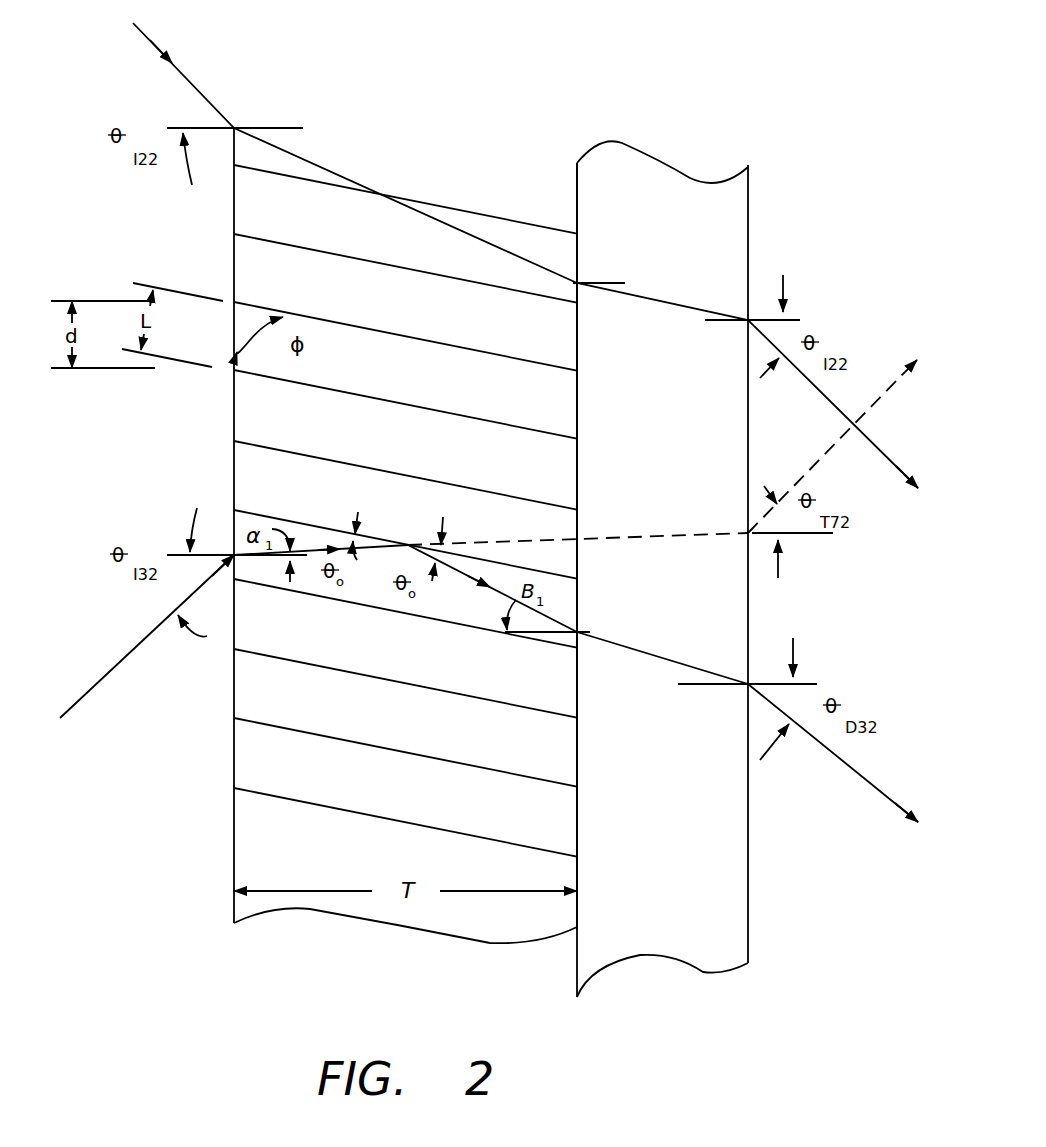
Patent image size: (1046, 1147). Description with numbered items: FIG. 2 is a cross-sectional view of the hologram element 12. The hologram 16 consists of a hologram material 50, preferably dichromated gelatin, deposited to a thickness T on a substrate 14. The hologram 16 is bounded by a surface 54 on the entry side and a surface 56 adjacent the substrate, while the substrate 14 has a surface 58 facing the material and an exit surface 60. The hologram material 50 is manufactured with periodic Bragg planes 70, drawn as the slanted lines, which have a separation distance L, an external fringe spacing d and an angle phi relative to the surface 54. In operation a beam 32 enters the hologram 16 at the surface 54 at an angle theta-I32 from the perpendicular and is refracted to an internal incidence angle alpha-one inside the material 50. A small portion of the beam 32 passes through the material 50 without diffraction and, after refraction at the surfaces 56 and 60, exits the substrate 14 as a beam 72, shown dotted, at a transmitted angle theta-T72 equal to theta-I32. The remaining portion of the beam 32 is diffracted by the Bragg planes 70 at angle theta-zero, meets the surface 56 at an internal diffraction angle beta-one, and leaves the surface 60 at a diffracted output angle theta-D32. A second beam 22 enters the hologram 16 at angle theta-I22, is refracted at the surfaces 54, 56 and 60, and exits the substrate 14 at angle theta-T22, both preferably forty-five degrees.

The hologram element 12 is at (160, 902).
The substrate 14 is at (677, 812).
The hologram 16 is at (277, 762).
The beam 22 is at (150, 44).
The beam 32 is at (137, 645).
The hologram material 50 is at (420, 800).
The surface 54 is at (234, 838).
The surface 56 is at (577, 875).
The surface 58 is at (577, 917).
The surface 60 is at (748, 917).
The Bragg planes 70 is at (372, 330).
The beam 72 is at (888, 387).